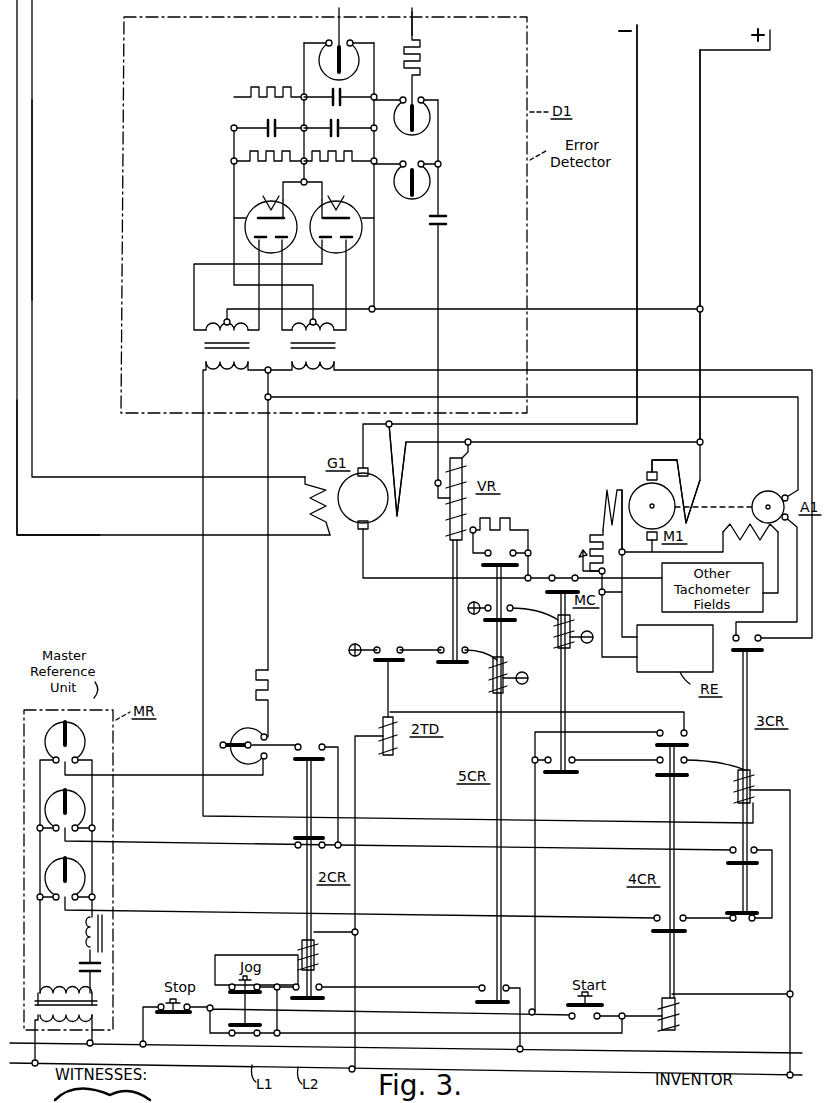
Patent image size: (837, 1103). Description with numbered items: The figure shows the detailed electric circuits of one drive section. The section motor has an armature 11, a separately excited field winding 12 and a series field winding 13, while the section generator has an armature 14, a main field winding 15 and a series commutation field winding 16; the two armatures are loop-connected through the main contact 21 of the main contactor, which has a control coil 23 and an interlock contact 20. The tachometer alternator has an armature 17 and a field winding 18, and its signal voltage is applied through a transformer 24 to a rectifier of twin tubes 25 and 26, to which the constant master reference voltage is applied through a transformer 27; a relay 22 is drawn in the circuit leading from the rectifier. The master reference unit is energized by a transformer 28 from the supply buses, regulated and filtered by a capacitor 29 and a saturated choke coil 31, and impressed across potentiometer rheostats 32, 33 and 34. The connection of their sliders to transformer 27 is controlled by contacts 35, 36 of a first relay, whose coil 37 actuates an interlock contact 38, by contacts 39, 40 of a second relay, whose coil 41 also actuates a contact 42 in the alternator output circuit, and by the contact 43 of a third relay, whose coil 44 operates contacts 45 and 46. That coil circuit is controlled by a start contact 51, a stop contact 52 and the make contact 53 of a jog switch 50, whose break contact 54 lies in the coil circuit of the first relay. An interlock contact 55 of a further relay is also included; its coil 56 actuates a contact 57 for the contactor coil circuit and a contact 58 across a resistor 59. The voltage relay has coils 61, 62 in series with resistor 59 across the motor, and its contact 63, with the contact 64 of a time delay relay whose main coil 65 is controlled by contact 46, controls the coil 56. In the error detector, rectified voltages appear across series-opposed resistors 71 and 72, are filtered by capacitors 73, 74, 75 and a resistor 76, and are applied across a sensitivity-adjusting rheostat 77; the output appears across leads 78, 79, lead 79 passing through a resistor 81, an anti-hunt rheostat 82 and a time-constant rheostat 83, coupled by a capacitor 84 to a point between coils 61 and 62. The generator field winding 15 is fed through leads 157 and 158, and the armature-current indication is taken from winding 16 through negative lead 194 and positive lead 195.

The armature 11 is at (650, 474).
The separately excited field winding 12 is at (610, 488).
The series field winding 13 is at (695, 502).
The armature 14 is at (370, 512).
The main field winding 15 is at (306, 511).
The series field winding 16 is at (402, 500).
The armature 17 is at (762, 492).
The field winding 18 is at (760, 540).
The interlock contact 20 is at (580, 770).
The main contact 21 is at (546, 592).
The relay 22 is at (236, 757).
The control coil 23 is at (553, 625).
The transformer 24 is at (338, 347).
The twin tube 25 is at (234, 218).
The twin tube 26 is at (374, 218).
The transformer 27 is at (203, 347).
The transformer 28 is at (100, 1005).
The capacitor 29 is at (80, 966).
The saturated choke coil 31 is at (84, 937).
The potentiometer rheostat 32 is at (85, 876).
The potentiometer rheostat 33 is at (85, 810).
The potentiometer rheostat 34 is at (80, 730).
The contact 35 is at (296, 838).
The contact 36 is at (306, 746).
The control coil 37 is at (300, 942).
The interlock contact 38 is at (324, 998).
The contact 39 is at (742, 919).
The contact 40 is at (730, 864).
The coil 41 is at (752, 776).
The contact 42 is at (762, 652).
The contact 43 is at (652, 932).
The coil 44 is at (678, 1000).
The contact 45 is at (666, 777).
The contact 46 is at (690, 745).
The jog switch 50 is at (262, 982).
The start contact 51 is at (602, 1004).
The stop contact 52 is at (186, 1015).
The make contact 53 is at (268, 1026).
The break contact 54 is at (228, 992).
The interlock contact 55 is at (476, 1002).
The coil 56 is at (492, 673).
The contact 57 is at (488, 624).
The contact 58 is at (495, 783).
The resistor 59 is at (506, 522).
The coil 61 is at (470, 473).
The coil 62 is at (448, 516).
The contact 63 is at (448, 665).
The contact 64 is at (380, 664).
The main coil 65 is at (380, 721).
The resistor 71 is at (262, 162).
The resistor 72 is at (338, 162).
The capacitor 73 is at (268, 120).
The capacitor 74 is at (330, 122).
The capacitor 75 is at (343, 95).
The resistor 76 is at (288, 86).
The sensitivity-adjusting potentiometer rheostat 77 is at (376, 60).
The lead 78 is at (338, 32).
The lead 79 is at (420, 34).
The resistor 81 is at (426, 60).
The anti-hunt rheostat 82 is at (432, 120).
The time-constant rheostat 83 is at (432, 182).
The capacitor 84 is at (448, 221).
The common lead 157 is at (80, 536).
The lead 158 is at (33, 176).
The negative lead 194 is at (636, 213).
The positive lead 195 is at (701, 213).